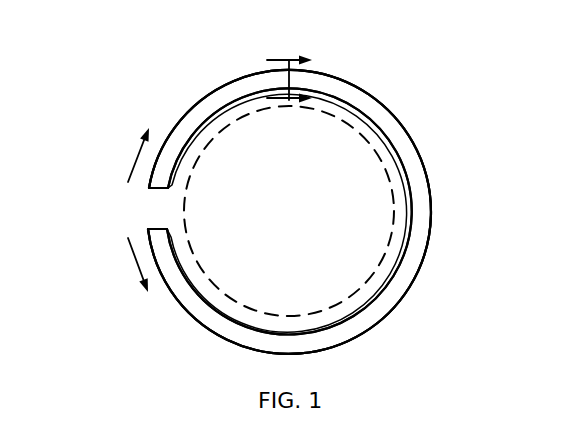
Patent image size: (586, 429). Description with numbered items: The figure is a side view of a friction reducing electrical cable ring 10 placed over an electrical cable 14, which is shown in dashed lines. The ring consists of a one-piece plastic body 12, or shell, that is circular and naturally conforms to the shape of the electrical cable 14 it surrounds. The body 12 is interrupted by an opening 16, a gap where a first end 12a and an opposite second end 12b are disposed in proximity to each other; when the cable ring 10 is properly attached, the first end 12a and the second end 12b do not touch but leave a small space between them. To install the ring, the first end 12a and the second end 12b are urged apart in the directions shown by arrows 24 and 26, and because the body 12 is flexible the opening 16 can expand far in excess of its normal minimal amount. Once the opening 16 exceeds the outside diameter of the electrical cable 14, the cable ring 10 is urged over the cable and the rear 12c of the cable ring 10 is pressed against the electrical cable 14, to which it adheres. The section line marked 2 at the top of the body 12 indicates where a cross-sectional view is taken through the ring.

The friction reducing electrical cable ring 10 is at (363, 81).
The one-piece plastic body 12 is at (408, 147).
The first end 12a is at (153, 198).
The second end 12b is at (158, 227).
The rear 12c is at (429, 207).
The electrical cable 14 is at (380, 262).
The opening 16 is at (146, 210).
The section line 2- 2 is at (287, 81).
The arrow 24 is at (130, 168).
The arrow 26 is at (135, 255).